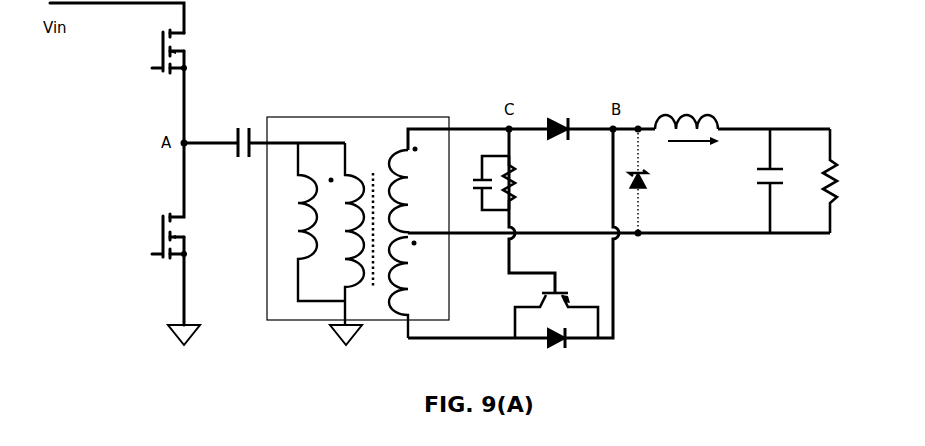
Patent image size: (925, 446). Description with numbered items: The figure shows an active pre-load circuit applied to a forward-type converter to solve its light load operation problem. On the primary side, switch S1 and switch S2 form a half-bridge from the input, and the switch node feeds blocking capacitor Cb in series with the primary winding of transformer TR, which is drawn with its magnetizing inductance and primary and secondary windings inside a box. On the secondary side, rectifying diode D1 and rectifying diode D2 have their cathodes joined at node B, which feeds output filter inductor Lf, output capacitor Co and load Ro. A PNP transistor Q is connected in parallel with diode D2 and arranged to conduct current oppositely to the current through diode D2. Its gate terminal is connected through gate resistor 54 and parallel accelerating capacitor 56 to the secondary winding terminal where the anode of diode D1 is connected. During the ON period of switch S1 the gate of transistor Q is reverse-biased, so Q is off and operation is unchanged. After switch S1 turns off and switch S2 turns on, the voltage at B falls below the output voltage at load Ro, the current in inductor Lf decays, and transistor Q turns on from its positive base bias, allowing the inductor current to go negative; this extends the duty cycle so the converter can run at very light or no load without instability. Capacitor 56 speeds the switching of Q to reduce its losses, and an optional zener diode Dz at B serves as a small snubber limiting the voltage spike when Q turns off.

The gate resistor 54 is at (512, 173).
The accelerating capacitor 56 is at (473, 187).
The switch S1 is at (153, 86).
The switch S2 is at (145, 234).
The blocking capacitor Cb is at (264, 158).
The transformer TR is at (358, 214).
The rectifying diode D1 is at (557, 113).
The rectifying diode D2 is at (546, 351).
The PNP transistor Q is at (556, 307).
The zener diode snubber Dz is at (663, 181).
The output filter inductor Lf is at (687, 131).
The output capacitor Co is at (755, 181).
The load Ro is at (845, 181).